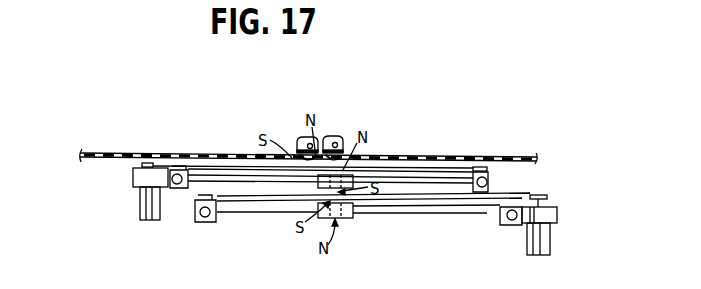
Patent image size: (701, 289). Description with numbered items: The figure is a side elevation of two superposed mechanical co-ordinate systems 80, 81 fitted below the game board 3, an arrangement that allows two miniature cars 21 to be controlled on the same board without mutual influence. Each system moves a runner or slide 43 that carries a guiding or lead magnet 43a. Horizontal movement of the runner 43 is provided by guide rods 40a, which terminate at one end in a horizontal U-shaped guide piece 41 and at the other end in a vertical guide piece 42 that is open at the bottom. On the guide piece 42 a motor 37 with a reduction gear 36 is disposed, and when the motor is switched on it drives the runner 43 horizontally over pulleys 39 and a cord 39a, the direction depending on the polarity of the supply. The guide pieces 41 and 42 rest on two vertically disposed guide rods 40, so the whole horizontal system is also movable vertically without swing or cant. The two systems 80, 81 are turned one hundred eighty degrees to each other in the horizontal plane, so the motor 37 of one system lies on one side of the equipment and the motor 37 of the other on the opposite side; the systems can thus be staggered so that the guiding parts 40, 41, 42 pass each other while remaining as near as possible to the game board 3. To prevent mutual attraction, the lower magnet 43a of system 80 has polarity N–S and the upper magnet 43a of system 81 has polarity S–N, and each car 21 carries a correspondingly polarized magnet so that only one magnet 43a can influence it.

The game board 3 is at (199, 152).
The miniature car 21 is at (296, 142).
The reduction gear 36 is at (140, 178).
The motor 37 is at (143, 205).
The pulleys 39 is at (142, 166).
The cord 39a is at (402, 187).
The vertically disposed guide rods 40 is at (176, 185).
The guide rods 40a is at (247, 186).
The horizontal U-shaped guide piece 41 is at (207, 223).
The vertical guide piece 42 is at (170, 178).
The runner 43 is at (350, 211).
The lead magnet 43a is at (366, 172).
The co-ordinate system 80 is at (622, 217).
The co-ordinate system 81 is at (66, 180).